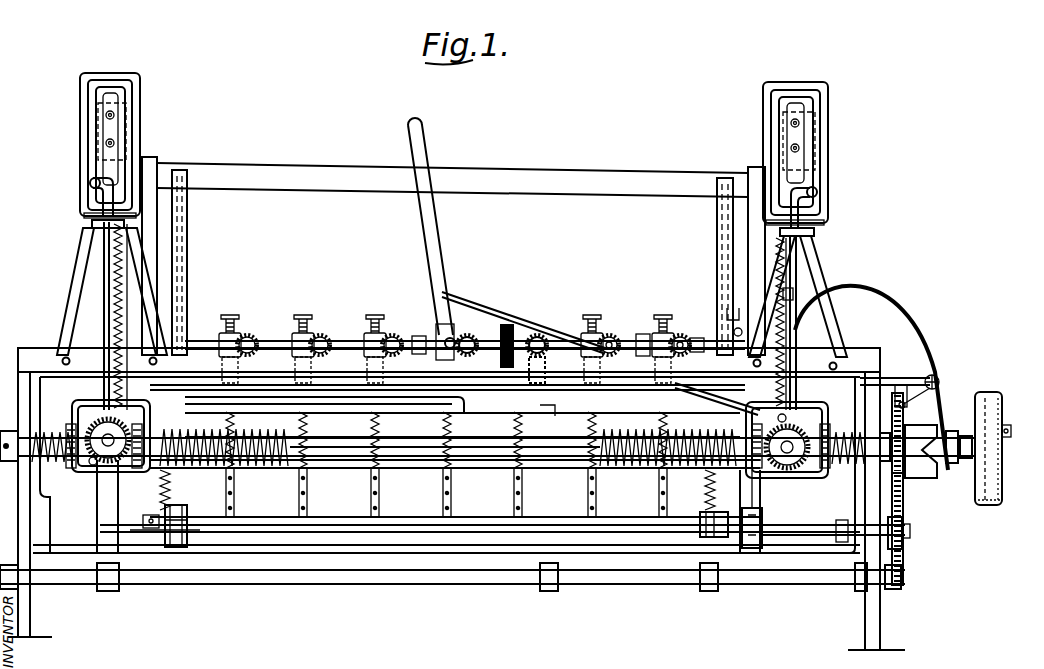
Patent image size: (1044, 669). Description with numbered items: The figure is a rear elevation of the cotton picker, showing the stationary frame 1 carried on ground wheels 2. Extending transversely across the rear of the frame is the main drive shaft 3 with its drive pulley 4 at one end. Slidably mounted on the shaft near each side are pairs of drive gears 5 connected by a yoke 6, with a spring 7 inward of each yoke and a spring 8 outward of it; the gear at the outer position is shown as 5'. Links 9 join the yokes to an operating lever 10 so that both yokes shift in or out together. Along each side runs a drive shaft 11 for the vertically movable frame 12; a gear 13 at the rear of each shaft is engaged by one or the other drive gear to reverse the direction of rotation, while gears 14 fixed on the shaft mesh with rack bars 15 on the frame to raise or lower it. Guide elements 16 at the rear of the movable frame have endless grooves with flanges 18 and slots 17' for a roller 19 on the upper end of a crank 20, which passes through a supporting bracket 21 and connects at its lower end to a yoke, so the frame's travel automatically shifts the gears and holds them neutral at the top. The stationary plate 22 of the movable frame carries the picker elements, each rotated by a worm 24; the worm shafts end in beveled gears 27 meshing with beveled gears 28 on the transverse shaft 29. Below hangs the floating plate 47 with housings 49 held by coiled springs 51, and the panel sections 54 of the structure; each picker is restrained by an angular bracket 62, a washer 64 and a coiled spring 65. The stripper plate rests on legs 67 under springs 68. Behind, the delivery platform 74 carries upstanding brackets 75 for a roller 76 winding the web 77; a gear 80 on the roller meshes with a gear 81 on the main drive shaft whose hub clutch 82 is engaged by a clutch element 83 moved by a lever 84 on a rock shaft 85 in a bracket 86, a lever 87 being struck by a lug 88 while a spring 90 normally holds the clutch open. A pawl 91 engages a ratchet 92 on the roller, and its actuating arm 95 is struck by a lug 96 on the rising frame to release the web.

The stationary frame 1 is at (853, 365).
The ground wheels 2 is at (30, 612).
The main drive shaft 3 is at (331, 445).
The drive pulley 4 is at (990, 410).
The drive gears 5 is at (467, 460).
The bevel gear 5' is at (396, 453).
The yoke 6 is at (73, 403).
The spring 7 is at (270, 470).
The spring 8 is at (40, 457).
The links 9 is at (333, 397).
The operating lever 10 is at (425, 222).
The drive shaft 11 is at (125, 175).
The vertically movable frame 12 is at (500, 175).
The gear 13 is at (95, 414).
The gears 14 is at (90, 465).
The rack bars 15 is at (114, 253).
The guide elements 16 is at (140, 90).
The slots 17' is at (455, 216).
The flanges 18 is at (120, 188).
The roller 19 is at (93, 183).
The crank 20 is at (104, 272).
The supporting bracket 21 is at (78, 297).
The stationary plate 22 is at (562, 412).
The worm 24 is at (658, 325).
The beveled gears 27 is at (678, 338).
The beveled gears 28 is at (695, 343).
The shaft 29 is at (420, 334).
The floating plate 47 is at (560, 472).
The housings 49 is at (380, 490).
The coiled springs 51 is at (440, 422).
The panel 54 is at (513, 492).
The angular bracket 62 is at (645, 340).
The washer 64 is at (590, 325).
The coiled spring 65 is at (600, 333).
The legs 67 is at (175, 506).
The springs 68 is at (160, 498).
The delivery platform 74 is at (230, 548).
The upstanding brackets 75 is at (143, 521).
The roller 76 is at (812, 540).
The web 77 is at (318, 520).
The gear 80 is at (904, 560).
The gear 81 is at (905, 404).
The hub clutch 82 is at (905, 470).
The clutch element 83 is at (940, 462).
The lever 84 is at (973, 390).
The rock shaft 85 is at (935, 377).
The bracket 86 is at (897, 375).
The lever 87 is at (886, 303).
The lug 88 is at (793, 294).
The spring 90 is at (915, 385).
The pawl 91 is at (750, 547).
The ratchet 92 is at (745, 516).
The actuating arm 95 is at (790, 536).
The lug 96 is at (742, 330).